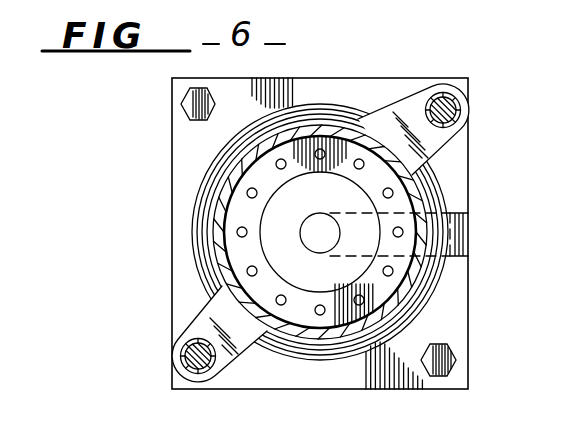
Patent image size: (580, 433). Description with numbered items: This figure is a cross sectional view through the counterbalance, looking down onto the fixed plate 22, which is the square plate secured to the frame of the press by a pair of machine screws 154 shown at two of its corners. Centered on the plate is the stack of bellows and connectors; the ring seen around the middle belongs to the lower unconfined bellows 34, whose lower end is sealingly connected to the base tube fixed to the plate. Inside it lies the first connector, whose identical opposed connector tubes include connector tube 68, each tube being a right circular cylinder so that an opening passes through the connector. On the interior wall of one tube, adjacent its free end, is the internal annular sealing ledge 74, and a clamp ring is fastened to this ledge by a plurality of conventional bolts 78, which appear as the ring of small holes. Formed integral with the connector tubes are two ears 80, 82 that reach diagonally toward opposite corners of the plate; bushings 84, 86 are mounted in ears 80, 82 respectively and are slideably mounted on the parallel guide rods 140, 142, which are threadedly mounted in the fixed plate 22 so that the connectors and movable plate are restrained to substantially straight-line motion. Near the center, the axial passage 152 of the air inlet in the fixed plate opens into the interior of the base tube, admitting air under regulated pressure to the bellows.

The fixed plate 22 is at (187, 296).
The lower unconfined bellows 34 is at (369, 122).
The connector tube 68 is at (405, 294).
The internal annular sealing ledge 74 is at (398, 207).
The bolts 78 is at (248, 268).
The ear 80 is at (201, 380).
The ear 82 is at (444, 91).
The bushing 84 is at (186, 366).
The bushing 86 is at (470, 132).
The guide rod 140 is at (181, 354).
The guide rod 142 is at (458, 104).
The axial passage 152 is at (318, 245).
The machine screws 154 is at (188, 106).